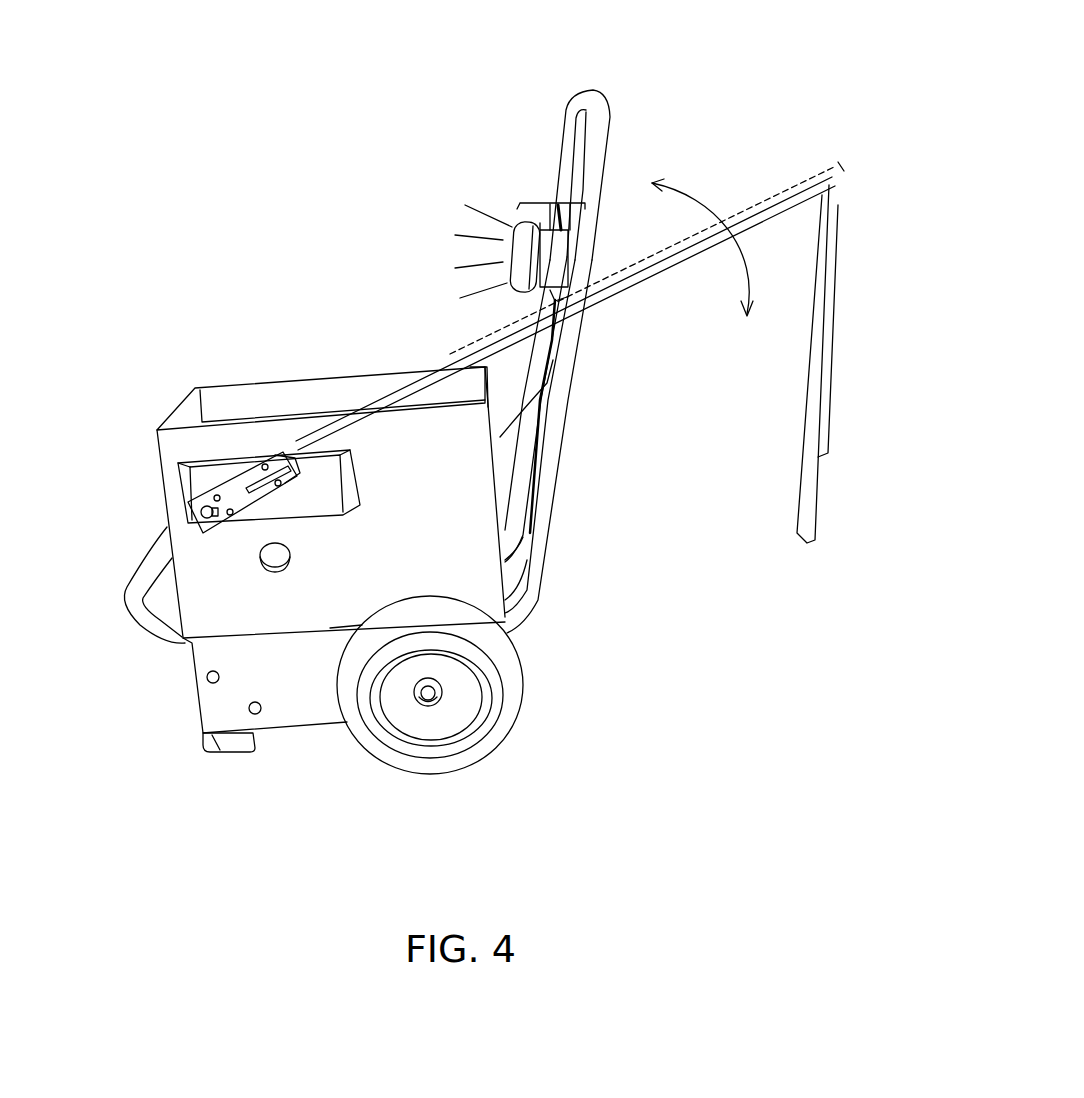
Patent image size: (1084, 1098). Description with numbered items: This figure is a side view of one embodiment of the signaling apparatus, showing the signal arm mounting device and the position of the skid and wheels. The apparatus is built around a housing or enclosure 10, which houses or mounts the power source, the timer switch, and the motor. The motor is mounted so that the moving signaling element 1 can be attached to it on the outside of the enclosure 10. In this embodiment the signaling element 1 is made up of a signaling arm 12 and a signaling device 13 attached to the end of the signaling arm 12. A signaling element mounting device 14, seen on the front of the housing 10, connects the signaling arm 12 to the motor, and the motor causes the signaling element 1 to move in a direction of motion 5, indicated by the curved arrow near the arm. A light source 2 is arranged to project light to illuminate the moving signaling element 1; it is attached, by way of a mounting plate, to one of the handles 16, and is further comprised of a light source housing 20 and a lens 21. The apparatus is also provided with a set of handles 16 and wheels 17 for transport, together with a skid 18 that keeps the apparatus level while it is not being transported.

The moving signaling element 1 is at (809, 170).
The light source 2 is at (537, 195).
The direction of motion 5 is at (713, 180).
The housing 10 is at (152, 448).
The signaling arm 12 is at (658, 292).
The signaling device 13 is at (852, 352).
The signaling element mounting device 14 is at (230, 548).
The handles 16 is at (601, 76).
The wheels 17 is at (530, 730).
The skid 18 is at (222, 772).
The light source housing 20 is at (523, 297).
The lens 21 is at (503, 252).